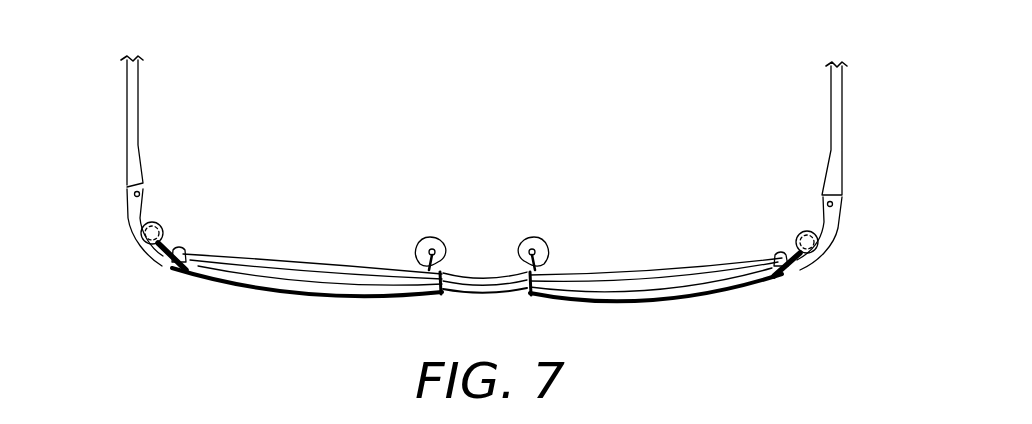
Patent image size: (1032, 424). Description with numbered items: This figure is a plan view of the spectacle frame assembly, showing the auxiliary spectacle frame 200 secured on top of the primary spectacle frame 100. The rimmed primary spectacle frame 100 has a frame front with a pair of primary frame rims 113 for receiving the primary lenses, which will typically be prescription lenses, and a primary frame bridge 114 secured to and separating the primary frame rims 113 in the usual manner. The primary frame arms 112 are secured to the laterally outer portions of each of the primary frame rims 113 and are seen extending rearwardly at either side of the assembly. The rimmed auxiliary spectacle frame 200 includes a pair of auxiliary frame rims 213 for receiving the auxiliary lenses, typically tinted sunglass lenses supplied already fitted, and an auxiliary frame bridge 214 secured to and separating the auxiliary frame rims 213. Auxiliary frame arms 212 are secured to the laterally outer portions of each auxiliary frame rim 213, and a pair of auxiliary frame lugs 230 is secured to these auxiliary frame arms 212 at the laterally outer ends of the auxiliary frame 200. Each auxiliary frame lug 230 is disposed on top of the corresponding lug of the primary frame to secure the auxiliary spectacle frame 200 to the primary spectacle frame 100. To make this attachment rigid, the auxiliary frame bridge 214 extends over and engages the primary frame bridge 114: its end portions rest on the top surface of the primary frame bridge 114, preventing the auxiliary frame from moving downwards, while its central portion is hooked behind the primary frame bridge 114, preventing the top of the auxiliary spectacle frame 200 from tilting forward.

The primary spectacle frame 100 is at (477, 273).
The primary frame arms 112 is at (131, 243).
The primary frame rims 113 is at (327, 283).
The primary frame bridge 114 is at (470, 290).
The auxiliary spectacle frame 200 is at (477, 293).
The auxiliary frame arms 212 is at (170, 270).
The auxiliary frame rims 213 is at (351, 300).
The auxiliary frame bridge 214 is at (472, 270).
The auxiliary frame lugs 230 is at (166, 223).